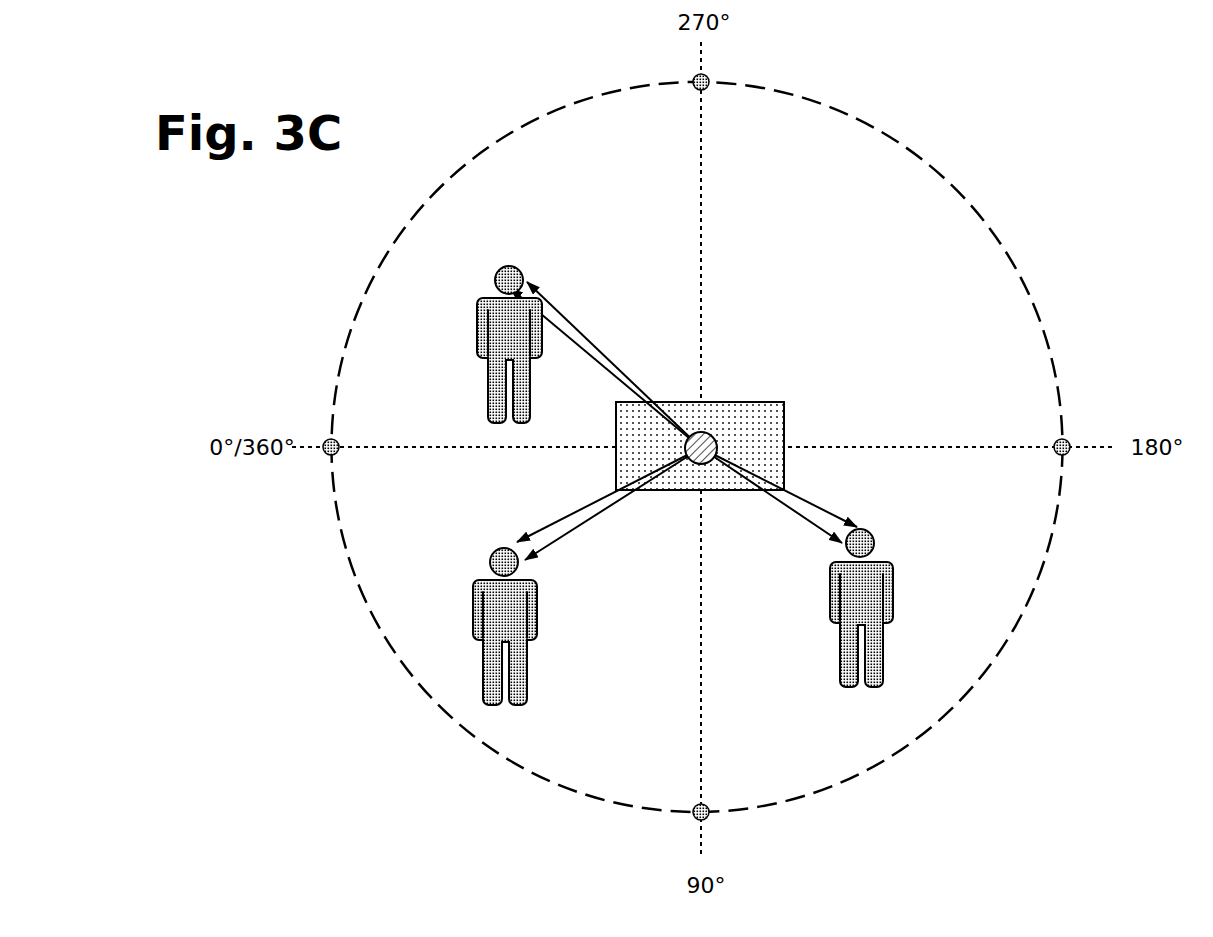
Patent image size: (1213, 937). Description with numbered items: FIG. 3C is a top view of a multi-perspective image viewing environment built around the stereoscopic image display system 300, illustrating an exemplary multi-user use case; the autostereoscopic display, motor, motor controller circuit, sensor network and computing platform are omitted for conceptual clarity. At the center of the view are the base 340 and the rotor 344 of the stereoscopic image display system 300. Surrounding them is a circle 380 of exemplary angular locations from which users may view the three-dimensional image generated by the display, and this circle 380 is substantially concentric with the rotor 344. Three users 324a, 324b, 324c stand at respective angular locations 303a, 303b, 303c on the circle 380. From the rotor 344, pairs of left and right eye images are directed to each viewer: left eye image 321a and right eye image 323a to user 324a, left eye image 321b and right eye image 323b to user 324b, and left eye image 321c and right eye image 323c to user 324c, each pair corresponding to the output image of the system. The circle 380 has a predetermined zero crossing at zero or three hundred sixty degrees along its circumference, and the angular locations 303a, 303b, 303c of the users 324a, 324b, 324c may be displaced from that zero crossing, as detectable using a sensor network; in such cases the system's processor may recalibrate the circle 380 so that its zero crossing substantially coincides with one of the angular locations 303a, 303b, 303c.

The stereoscopic image display system 300 is at (1030, 238).
The angular location 303a is at (362, 291).
The angular location 303b is at (437, 706).
The angular location 303c is at (979, 688).
The circle of exemplary angular locations 380 is at (575, 115).
The base 340 is at (786, 402).
The rotor 344 is at (714, 438).
The left eye image 321a is at (601, 338).
The left eye image 321b is at (538, 529).
The left eye image 321c is at (788, 510).
The right eye image 323a is at (575, 355).
The right eye image 323b is at (612, 511).
The right eye image 323c is at (818, 508).
The user 324a is at (477, 317).
The user 324b is at (539, 610).
The user 324c is at (895, 586).